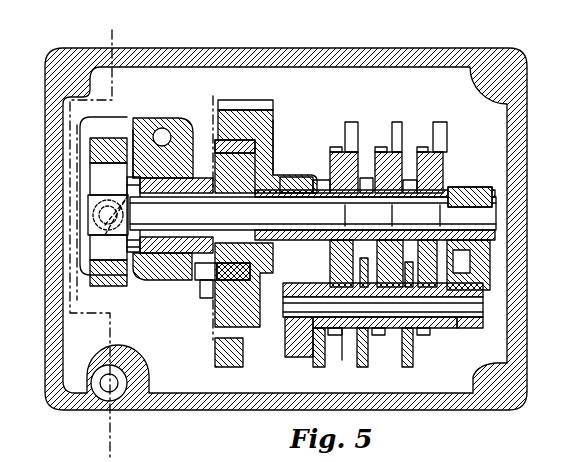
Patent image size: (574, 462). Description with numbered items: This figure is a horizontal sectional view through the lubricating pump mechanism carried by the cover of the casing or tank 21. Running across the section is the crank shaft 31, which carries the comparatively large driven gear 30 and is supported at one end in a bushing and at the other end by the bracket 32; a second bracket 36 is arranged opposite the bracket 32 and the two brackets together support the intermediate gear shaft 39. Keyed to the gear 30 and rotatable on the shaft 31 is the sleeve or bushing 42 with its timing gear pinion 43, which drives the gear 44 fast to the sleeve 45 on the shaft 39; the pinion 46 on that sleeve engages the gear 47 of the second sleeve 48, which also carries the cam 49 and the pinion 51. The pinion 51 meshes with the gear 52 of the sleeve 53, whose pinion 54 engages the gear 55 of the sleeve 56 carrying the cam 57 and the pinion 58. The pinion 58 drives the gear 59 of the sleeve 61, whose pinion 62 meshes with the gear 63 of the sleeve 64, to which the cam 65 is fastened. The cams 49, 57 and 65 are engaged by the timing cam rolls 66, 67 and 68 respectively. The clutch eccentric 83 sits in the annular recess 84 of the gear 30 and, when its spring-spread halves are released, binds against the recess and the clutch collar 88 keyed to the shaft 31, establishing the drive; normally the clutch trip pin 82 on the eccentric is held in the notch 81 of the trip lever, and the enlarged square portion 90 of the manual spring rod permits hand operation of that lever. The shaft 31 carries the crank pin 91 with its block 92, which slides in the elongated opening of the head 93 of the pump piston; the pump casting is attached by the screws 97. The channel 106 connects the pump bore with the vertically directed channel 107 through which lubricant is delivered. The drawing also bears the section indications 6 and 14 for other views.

The section line 6- 6 is at (100, 23).
The view direction 14 is at (212, 100).
The casing or tank 21 is at (527, 296).
The gear 30 is at (265, 102).
The crank shaft 31 is at (140, 213).
The bracket 32 is at (492, 247).
The second bracket 36 is at (296, 358).
The intermediate gear shaft 39 is at (483, 290).
The sleeve or bushing 42 is at (293, 177).
The timing gear pinion 43 is at (320, 180).
The gear 44 is at (318, 368).
The sleeve 45 is at (350, 340).
The pinion 46 is at (334, 336).
The gear 47 is at (333, 147).
The second sleeve 48 is at (338, 215).
The cam 49 is at (351, 122).
The pinion 51 is at (366, 178).
The gear 52 is at (364, 368).
The sleeve 53 is at (392, 295).
The pinion 54 is at (378, 336).
The gear 55 is at (380, 147).
The sleeve 56 is at (383, 215).
The cam 57 is at (397, 122).
The pinion 58 is at (410, 180).
The gear 59 is at (408, 368).
The sleeve 61 is at (438, 330).
The pinion 62 is at (424, 336).
The gear 63 is at (428, 147).
The sleeve 64 is at (425, 208).
The cam 65 is at (443, 123).
The timing cam roll 66 is at (333, 147).
The timing cam roll 67 is at (387, 147).
The timing cam roll 68 is at (440, 122).
The notch 81 is at (202, 300).
The clutch trip pin 82 is at (200, 280).
The clutch eccentric 83 is at (276, 135).
The annular recess 84 is at (216, 142).
The clutch collar 88 is at (262, 158).
The enlarged extended square portion 90 is at (215, 364).
The crank pin 91 is at (88, 220).
The block 92 is at (90, 188).
The head 93 is at (90, 150).
The screws 97 is at (150, 282).
The channel 106 is at (140, 122).
The vertically directed channel 107 is at (162, 128).